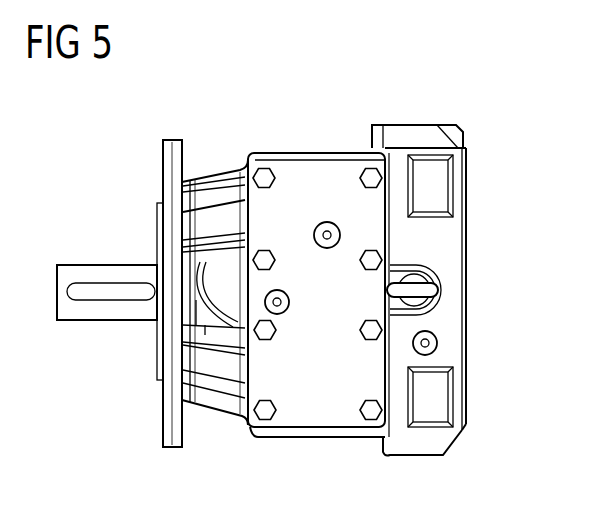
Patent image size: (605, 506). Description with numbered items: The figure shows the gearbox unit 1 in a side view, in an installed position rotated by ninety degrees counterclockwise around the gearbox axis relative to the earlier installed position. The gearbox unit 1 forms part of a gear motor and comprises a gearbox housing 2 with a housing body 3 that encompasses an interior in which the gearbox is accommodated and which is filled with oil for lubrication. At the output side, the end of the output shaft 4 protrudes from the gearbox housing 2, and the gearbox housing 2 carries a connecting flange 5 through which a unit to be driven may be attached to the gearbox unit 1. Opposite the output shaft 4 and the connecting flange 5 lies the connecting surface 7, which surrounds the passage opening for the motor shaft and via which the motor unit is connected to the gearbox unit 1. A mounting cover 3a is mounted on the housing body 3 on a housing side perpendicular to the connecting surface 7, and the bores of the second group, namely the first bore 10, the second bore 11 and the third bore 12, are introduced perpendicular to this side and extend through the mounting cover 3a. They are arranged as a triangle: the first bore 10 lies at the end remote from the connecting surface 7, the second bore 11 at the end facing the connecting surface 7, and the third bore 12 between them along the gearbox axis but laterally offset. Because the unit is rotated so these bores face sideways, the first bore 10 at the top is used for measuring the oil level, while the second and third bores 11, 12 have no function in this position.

The gearbox unit 1 is at (522, 136).
The gearbox housing 2 is at (236, 148).
The housing body 3 is at (330, 190).
The mounting cover 3a is at (342, 378).
The output shaft 4 is at (106, 322).
The connecting flange 5 is at (163, 165).
The connecting surface 7 is at (467, 205).
The first bore 10 is at (286, 308).
The second bore 11 is at (437, 343).
The third bore 12 is at (340, 235).